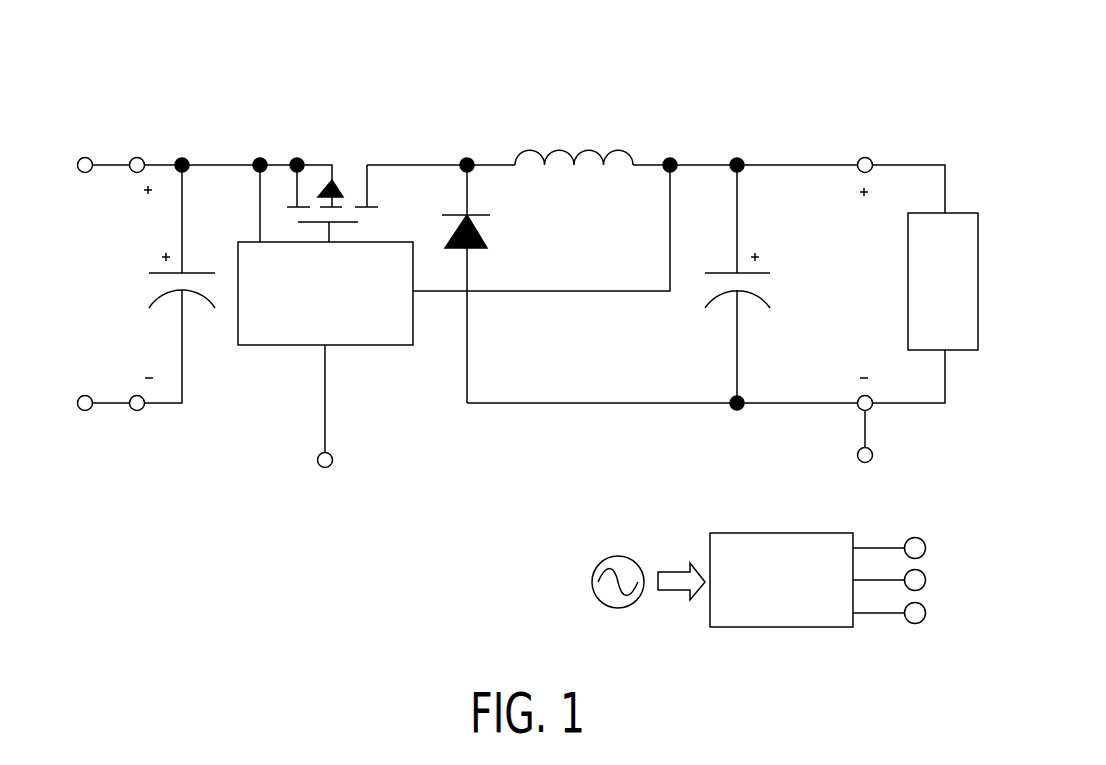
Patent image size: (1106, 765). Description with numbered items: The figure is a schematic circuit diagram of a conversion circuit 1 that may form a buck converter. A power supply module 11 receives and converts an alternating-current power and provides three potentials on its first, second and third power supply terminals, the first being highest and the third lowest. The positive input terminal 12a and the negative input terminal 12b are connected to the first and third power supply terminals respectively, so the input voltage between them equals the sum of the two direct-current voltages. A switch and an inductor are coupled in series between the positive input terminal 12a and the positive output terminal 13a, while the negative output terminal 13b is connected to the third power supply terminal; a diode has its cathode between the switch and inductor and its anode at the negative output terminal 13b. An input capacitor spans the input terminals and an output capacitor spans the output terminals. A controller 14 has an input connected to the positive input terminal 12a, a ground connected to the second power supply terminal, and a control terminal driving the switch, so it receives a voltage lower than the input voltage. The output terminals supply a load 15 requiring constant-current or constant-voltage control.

The conversion circuit 1 is at (942, 78).
The power supply module 11 is at (783, 533).
The positive input terminal 12a is at (139, 147).
The negative input terminal 12b is at (139, 426).
The positive output terminal 13a is at (864, 147).
The negative output terminal 13b is at (887, 437).
The controller 14 is at (377, 347).
The load 15 is at (978, 280).